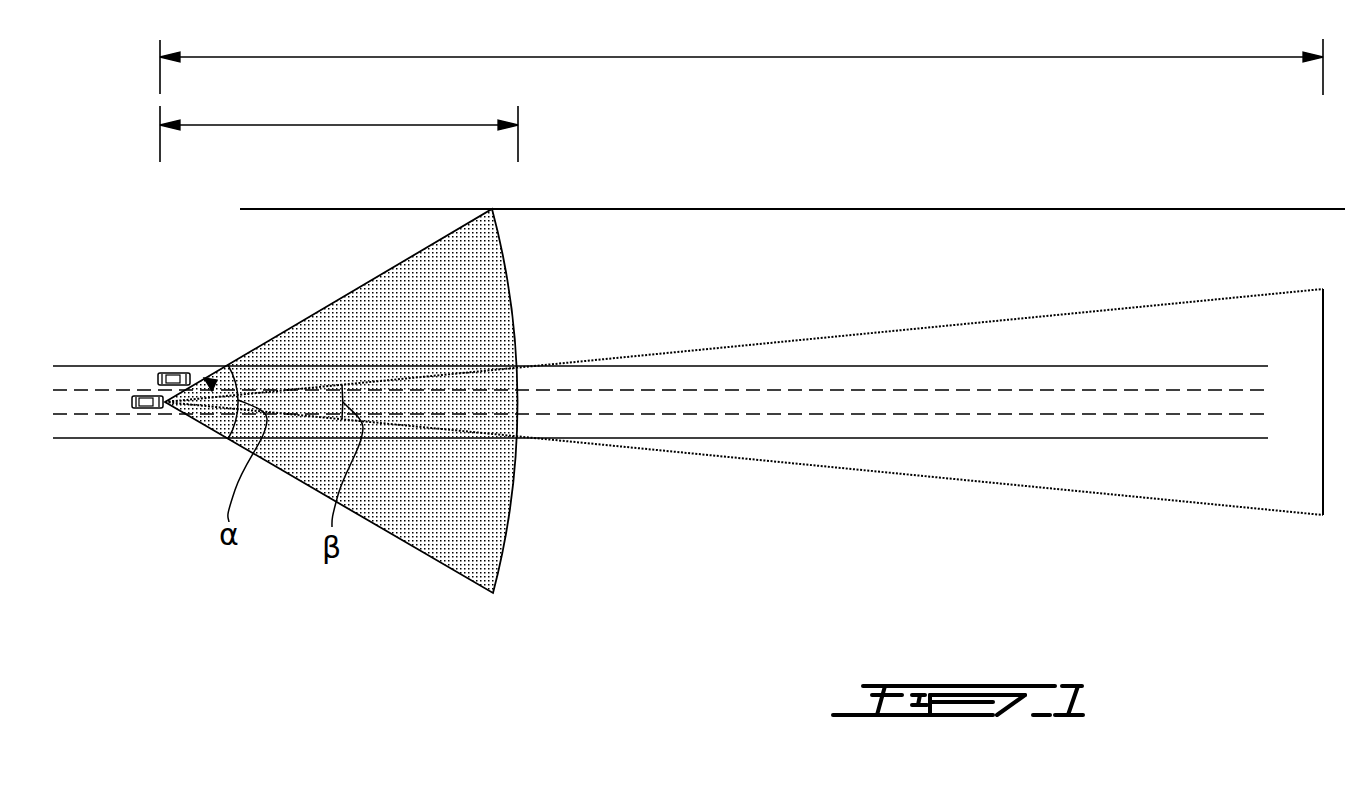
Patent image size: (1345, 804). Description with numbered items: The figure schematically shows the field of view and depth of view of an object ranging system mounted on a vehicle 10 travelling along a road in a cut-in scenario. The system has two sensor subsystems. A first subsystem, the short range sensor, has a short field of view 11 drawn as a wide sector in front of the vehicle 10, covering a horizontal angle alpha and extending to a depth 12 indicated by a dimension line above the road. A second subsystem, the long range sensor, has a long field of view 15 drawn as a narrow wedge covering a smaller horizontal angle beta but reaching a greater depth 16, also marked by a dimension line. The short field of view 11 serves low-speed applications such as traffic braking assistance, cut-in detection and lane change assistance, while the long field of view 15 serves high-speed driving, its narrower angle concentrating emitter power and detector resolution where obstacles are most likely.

The vehicle 10 is at (150, 392).
The short field of view 11 is at (350, 320).
The depth 12 is at (339, 127).
The long field of view 15 is at (878, 349).
The greater depth 16 is at (741, 59).